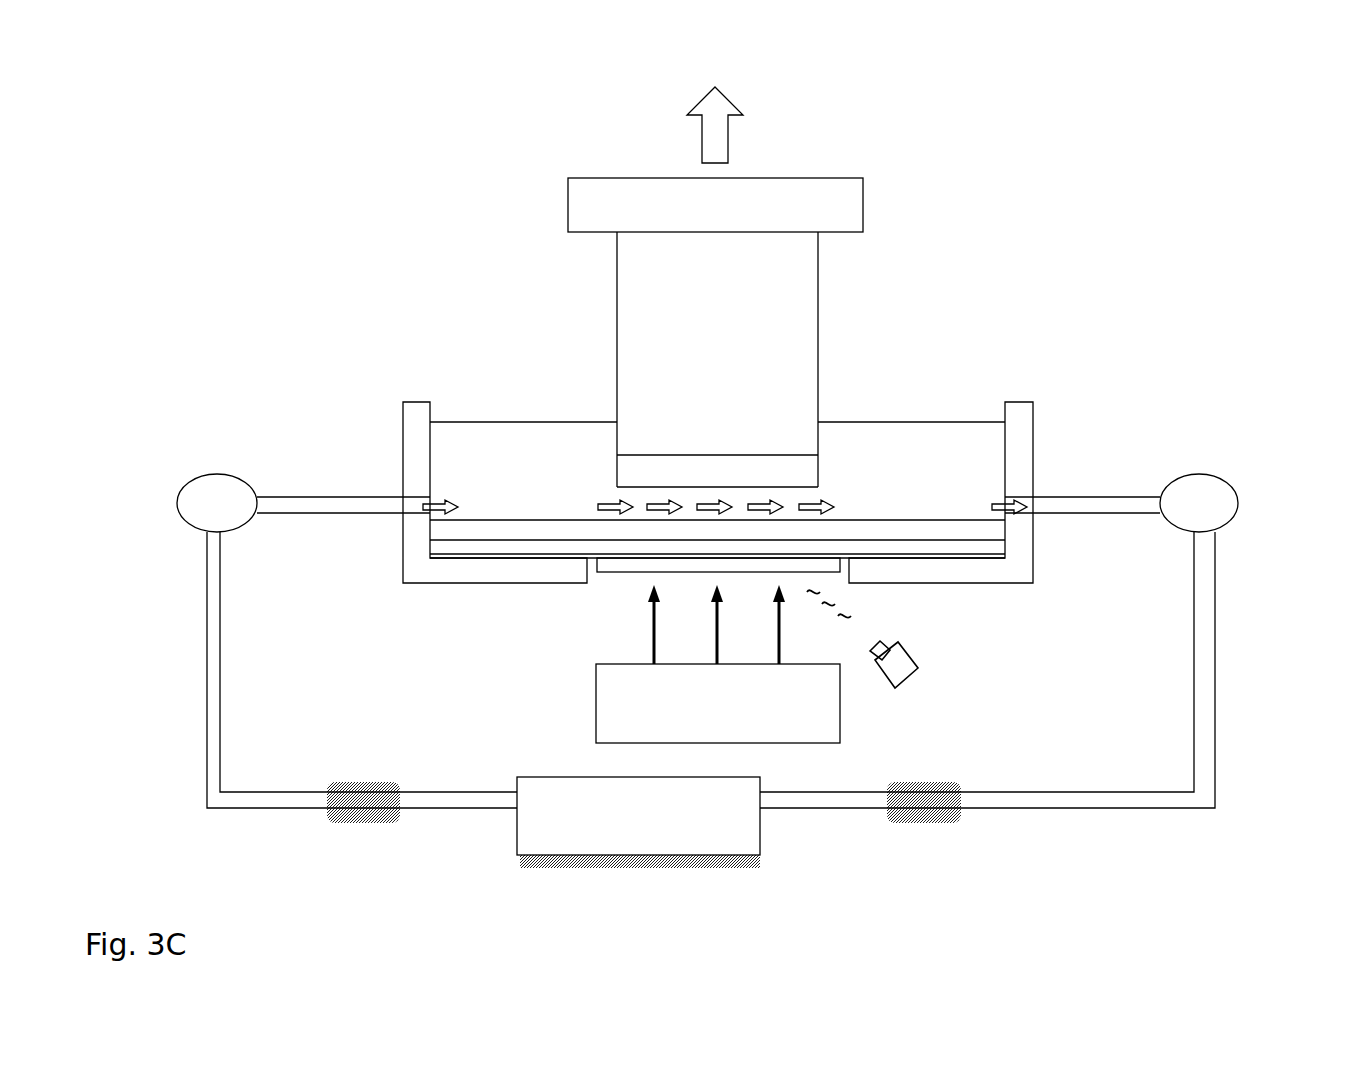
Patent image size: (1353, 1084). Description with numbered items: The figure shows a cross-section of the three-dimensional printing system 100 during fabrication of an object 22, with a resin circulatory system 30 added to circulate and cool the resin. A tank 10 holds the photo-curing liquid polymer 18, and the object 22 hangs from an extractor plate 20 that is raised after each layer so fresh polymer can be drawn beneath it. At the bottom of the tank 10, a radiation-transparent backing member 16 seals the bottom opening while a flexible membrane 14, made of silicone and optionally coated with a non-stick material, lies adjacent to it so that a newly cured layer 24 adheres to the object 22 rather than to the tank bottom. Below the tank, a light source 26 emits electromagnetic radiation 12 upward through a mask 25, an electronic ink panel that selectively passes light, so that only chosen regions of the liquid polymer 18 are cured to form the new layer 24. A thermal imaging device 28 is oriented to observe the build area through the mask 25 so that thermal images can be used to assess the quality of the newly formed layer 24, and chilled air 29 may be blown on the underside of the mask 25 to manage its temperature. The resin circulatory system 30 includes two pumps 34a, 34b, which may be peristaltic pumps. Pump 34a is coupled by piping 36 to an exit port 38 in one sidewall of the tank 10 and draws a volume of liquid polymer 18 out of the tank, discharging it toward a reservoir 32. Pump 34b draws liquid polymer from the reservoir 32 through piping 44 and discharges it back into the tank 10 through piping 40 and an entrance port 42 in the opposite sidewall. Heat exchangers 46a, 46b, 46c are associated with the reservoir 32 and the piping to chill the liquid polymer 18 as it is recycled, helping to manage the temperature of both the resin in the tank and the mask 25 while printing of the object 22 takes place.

The 3D printing system 100 is at (233, 83).
The tank 10 is at (410, 424).
The electromagnetic radiation 12 is at (605, 643).
The flexible membrane 14 is at (430, 526).
The radiation-transparent backing member 16 is at (430, 553).
The photo-curing liquid polymer 18 is at (903, 475).
The extractor plate 20 is at (701, 219).
The object 22 is at (703, 357).
The new layer 24 is at (678, 465).
The mask 25 is at (632, 570).
The light source 26 is at (704, 717).
The thermal imaging device 28 is at (912, 666).
The chilled air 29 is at (822, 612).
The resin circulatory system 30 is at (1241, 455).
The reservoir 32 is at (624, 831).
The pump 34a is at (1232, 500).
The pump 34b is at (188, 497).
The piping 36 is at (1084, 503).
The exit port 38 is at (1043, 525).
The piping 40 is at (322, 510).
The entrance port 42 is at (393, 494).
The piping 44 is at (212, 681).
The heat exchanger 46a is at (668, 860).
The heat exchanger 46b is at (945, 818).
The heat exchanger 46c is at (385, 815).